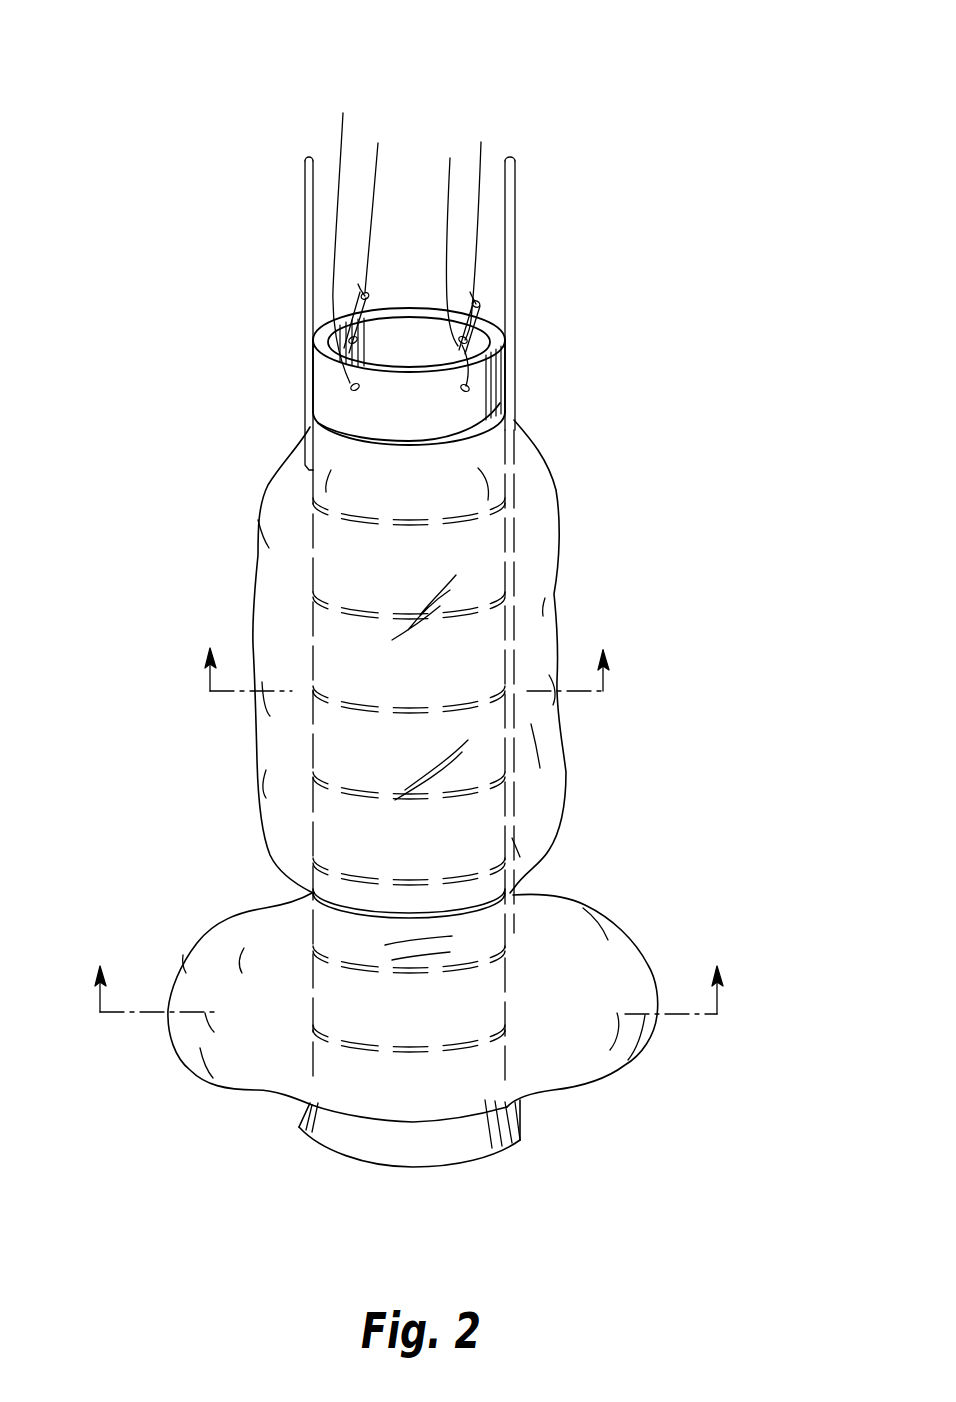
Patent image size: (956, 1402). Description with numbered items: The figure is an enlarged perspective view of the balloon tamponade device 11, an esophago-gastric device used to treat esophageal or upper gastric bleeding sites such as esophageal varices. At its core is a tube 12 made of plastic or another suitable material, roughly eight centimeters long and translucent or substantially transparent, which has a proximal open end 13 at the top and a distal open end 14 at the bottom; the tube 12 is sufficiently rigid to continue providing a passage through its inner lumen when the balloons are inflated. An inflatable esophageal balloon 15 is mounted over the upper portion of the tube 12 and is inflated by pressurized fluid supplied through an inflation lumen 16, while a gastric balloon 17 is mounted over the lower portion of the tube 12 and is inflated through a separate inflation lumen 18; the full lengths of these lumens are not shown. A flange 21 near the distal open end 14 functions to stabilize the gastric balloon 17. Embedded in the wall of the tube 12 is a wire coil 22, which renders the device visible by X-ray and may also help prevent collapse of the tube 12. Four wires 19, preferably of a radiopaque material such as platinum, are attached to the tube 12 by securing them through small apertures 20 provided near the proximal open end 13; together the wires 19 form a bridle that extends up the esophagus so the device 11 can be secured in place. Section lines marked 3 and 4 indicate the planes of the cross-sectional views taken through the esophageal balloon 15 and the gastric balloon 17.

The balloon tamponade device 11 is at (547, 112).
The tube 12 is at (505, 400).
The proximal open end 13 is at (410, 298).
The distal open end 14 is at (412, 1172).
The inflatable esophageal balloon 15 is at (260, 509).
The inflation lumen 16 is at (306, 222).
The gastric balloon 17 is at (642, 958).
The inflation lumen 18 is at (516, 245).
The wires 19 is at (343, 155).
The apertures 20 is at (351, 390).
The flange 21 is at (520, 1105).
The wire coil 22 is at (374, 438).
The section line 3- 3 is at (407, 644).
The section line 4- 4 is at (407, 967).